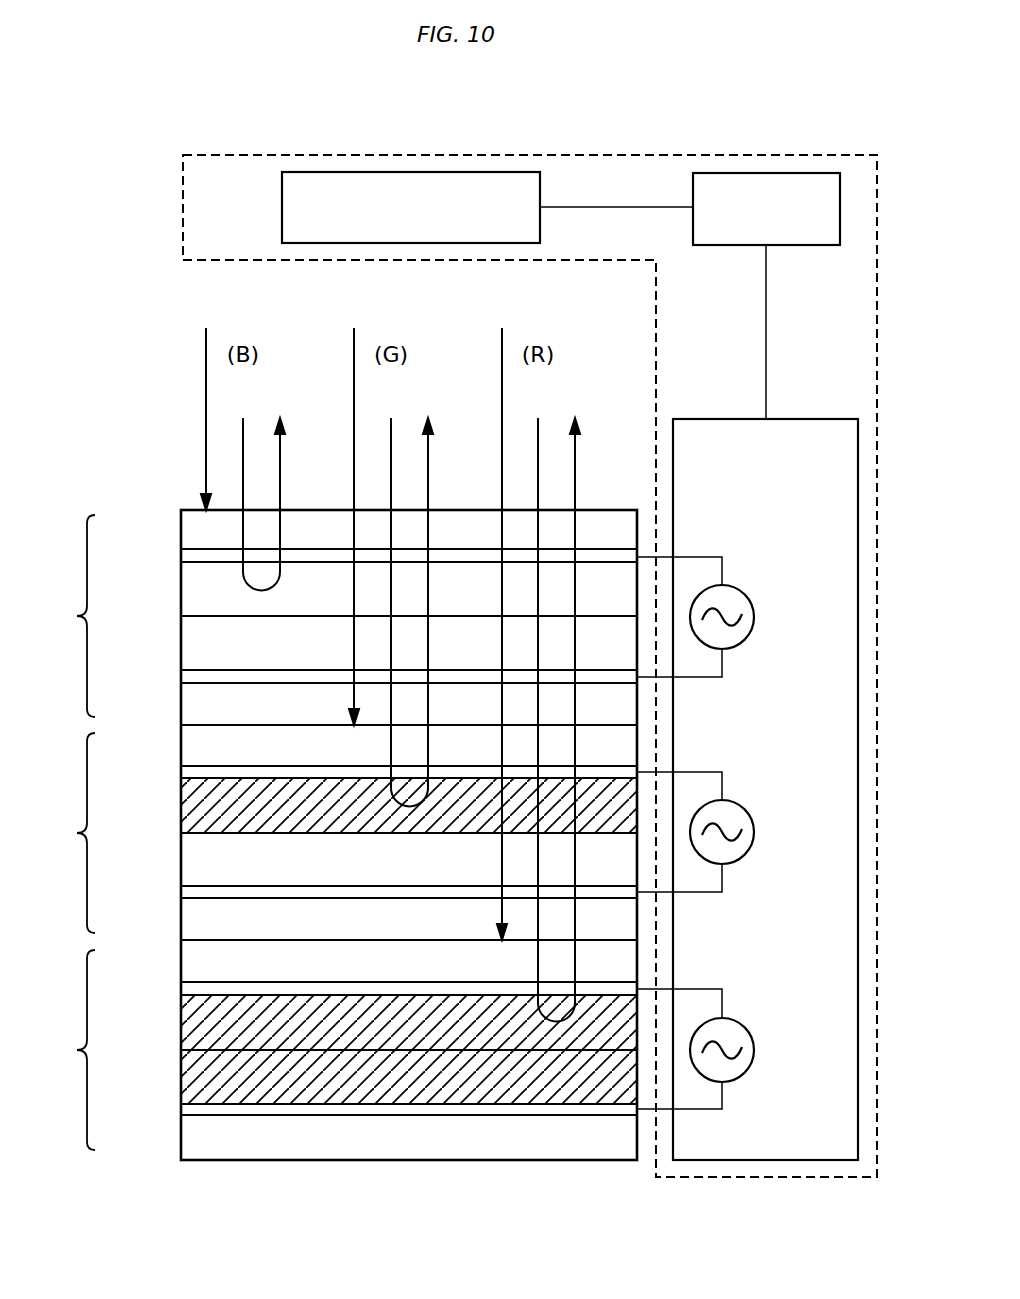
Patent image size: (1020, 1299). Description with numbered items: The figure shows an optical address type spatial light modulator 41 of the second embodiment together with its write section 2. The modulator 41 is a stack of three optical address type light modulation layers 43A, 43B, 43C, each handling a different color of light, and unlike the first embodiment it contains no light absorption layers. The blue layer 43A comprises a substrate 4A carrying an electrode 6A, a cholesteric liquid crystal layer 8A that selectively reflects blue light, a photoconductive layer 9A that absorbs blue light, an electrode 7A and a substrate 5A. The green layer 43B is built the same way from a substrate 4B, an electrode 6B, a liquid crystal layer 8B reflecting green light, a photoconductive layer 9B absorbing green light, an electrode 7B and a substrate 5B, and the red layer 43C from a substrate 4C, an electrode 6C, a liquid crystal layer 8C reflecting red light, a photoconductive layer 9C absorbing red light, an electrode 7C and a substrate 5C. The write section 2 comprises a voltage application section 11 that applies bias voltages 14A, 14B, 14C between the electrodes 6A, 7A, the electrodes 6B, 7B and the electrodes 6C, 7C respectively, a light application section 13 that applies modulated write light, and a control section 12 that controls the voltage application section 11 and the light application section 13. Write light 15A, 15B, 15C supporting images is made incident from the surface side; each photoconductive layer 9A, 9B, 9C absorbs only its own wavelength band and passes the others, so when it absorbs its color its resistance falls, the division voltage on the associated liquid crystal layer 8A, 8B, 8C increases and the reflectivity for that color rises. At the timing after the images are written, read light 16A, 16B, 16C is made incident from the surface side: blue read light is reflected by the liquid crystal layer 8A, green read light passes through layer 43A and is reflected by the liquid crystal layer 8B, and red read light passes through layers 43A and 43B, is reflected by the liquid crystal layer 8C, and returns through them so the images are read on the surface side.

The write section 2 is at (703, 156).
The voltage application section 11 is at (810, 418).
The control section 12 is at (804, 246).
The light application section 13 is at (282, 209).
The bias voltage 14A is at (755, 617).
The bias voltage 14B is at (755, 832).
The bias voltage 14C is at (755, 1050).
The write light 15A is at (206, 404).
The write light 15B is at (354, 511).
The write light 15C is at (502, 619).
The read light 16A is at (271, 489).
The read light 16B is at (419, 597).
The read light 16C is at (566, 705).
The optical address type spatial light modulator 41 is at (190, 499).
The optical address type light modulation layer 43A is at (59, 616).
The optical address type light modulation layer 43B is at (59, 833).
The optical address type light modulation layer 43C is at (59, 1050).
The substrate 4A is at (180, 540).
The electrode 6A is at (180, 565).
The cholesteric liquid crystal layer 8A is at (180, 595).
The photoconductive layer 9A is at (180, 650).
The electrode 7A is at (180, 683).
The substrate 5A is at (180, 712).
The substrate 4B is at (180, 748).
The electrode 6B is at (180, 772).
The cholesteric liquid crystal layer 8B is at (180, 805).
The photoconductive layer 9B is at (180, 860).
The electrode 7B is at (180, 893).
The substrate 5B is at (180, 920).
The substrate 4C is at (180, 965).
The electrode 6C is at (180, 990).
The cholesteric liquid crystal layer 8C is at (180, 1022).
The photoconductive layer 9C is at (180, 1077).
The electrode 7C is at (180, 1110).
The substrate 5C is at (180, 1137).